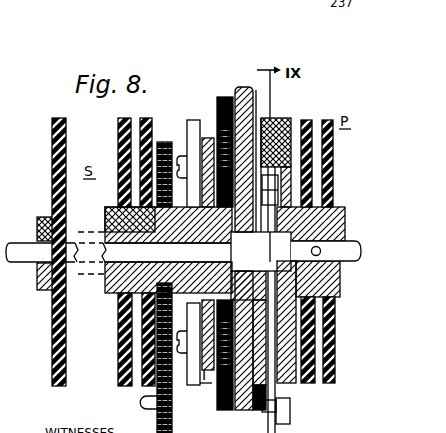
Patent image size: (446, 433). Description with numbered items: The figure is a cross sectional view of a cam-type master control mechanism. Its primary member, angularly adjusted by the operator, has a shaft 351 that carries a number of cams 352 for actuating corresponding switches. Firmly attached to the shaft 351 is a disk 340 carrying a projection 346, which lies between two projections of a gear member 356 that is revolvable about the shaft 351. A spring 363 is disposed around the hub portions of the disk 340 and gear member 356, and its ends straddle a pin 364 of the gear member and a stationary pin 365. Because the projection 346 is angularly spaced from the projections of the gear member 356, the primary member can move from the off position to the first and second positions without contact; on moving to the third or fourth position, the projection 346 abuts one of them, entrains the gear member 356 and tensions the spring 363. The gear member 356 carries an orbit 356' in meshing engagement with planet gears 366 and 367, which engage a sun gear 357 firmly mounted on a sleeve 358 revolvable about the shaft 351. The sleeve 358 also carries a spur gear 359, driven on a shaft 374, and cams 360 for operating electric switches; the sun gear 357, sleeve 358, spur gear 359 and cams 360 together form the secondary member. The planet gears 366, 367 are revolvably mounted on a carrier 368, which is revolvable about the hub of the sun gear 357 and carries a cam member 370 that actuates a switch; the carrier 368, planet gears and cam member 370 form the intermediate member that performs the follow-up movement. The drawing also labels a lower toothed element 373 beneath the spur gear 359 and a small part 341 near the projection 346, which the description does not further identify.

The cams 360 is at (118, 133).
The carrier 368 is at (150, 172).
The sun gear 357 is at (150, 210).
The spur gear 359 is at (161, 142).
The gear 373 is at (172, 420).
The cam member 370 is at (193, 120).
The orbit 356' is at (206, 252).
The gear member 356 is at (233, 239).
The projection 346 is at (276, 118).
The pinion 341 is at (271, 190).
The disk 340 is at (275, 378).
The stationary pin 365 is at (290, 410).
The cams 352 is at (310, 120).
The planet gear 366 is at (335, 143).
The shaft 351 is at (24, 256).
The sleeve 358 is at (107, 279).
The shaft 374 is at (138, 398).
The pin 364 is at (296, 368).
The spring 363 is at (315, 337).
The planet gear 367 is at (335, 310).